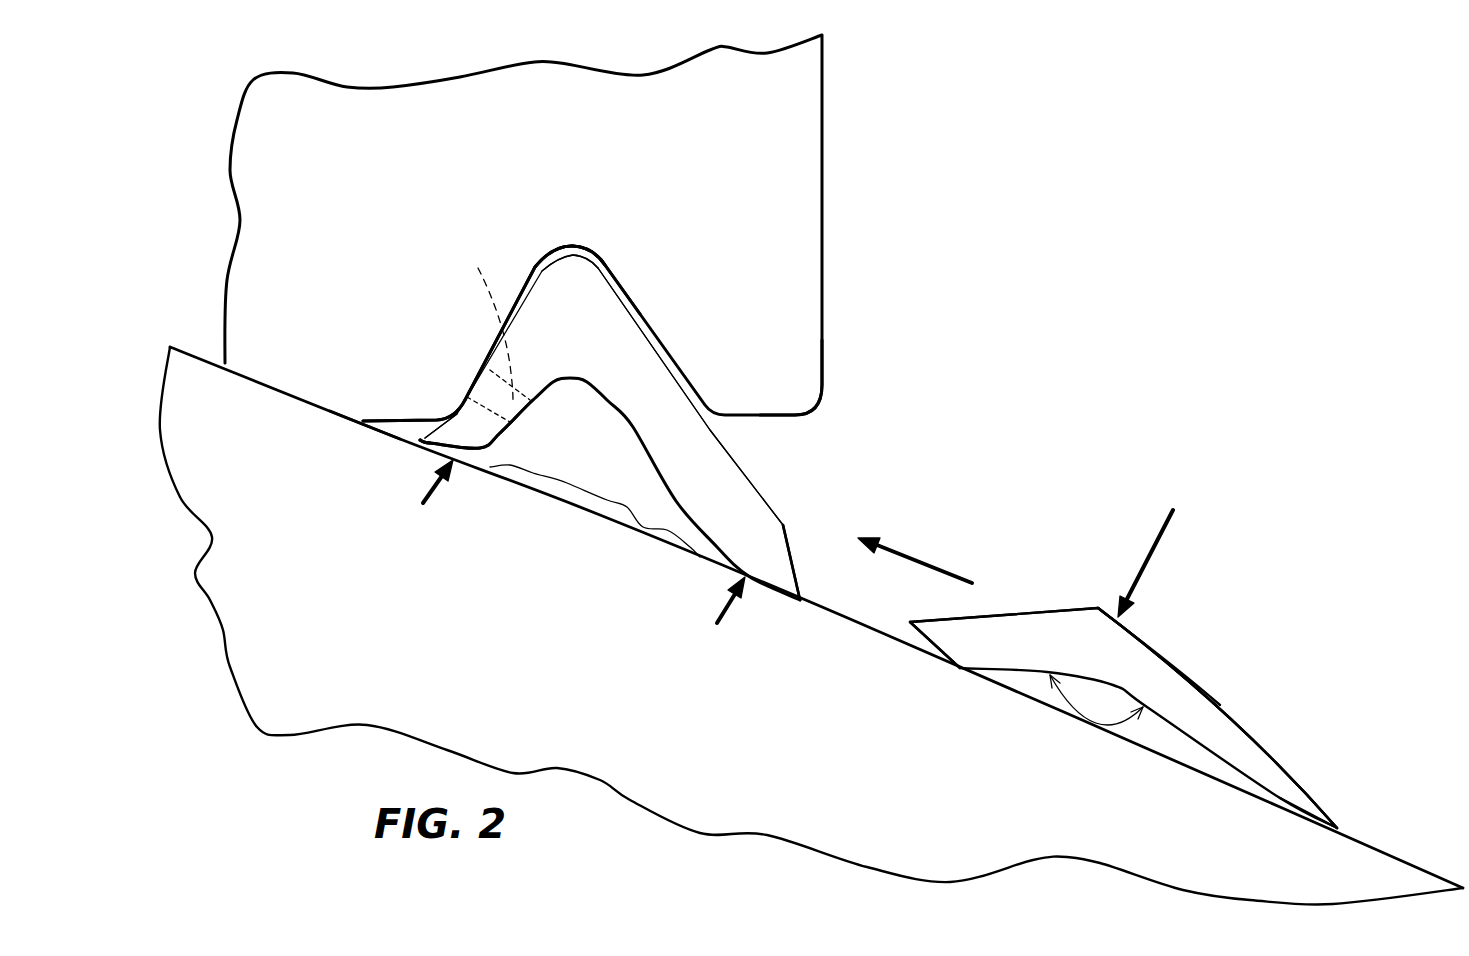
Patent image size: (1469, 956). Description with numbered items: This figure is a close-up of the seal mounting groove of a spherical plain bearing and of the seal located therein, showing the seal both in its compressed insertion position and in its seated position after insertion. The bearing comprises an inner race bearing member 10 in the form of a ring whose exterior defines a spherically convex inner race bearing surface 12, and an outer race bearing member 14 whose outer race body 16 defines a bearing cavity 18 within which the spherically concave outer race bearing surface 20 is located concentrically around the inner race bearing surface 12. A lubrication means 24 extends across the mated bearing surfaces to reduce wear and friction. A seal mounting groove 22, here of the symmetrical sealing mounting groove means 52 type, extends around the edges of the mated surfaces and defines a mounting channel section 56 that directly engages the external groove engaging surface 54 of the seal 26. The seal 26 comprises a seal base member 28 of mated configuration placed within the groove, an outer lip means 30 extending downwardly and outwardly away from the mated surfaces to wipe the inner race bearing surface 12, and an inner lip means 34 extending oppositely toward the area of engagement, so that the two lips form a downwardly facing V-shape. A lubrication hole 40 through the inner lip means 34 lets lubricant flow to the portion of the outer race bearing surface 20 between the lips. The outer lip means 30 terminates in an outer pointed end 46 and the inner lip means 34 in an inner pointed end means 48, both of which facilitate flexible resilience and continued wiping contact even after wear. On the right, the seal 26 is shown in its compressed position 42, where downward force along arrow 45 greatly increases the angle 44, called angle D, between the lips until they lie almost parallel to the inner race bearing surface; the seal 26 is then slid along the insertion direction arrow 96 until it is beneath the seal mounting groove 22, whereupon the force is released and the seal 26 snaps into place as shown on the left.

The inner race bearing member 10 is at (254, 470).
The inner race bearing surface 12 is at (392, 417).
The outer race bearing member 14 is at (746, 295).
The outer race body 16 is at (823, 380).
The bearing cavity 18 is at (395, 435).
The outer race bearing surface 20 is at (410, 428).
The seal mounting groove 22 is at (620, 283).
The lubrication means 24 is at (617, 515).
The seal 26 is at (735, 500).
The seal base member 28 is at (560, 267).
The outer lip means 30 is at (659, 448).
The inner lip means 34 is at (456, 440).
The lubrication hole 40 is at (495, 328).
The compressed position 42 is at (1093, 607).
The angle D 44 is at (1100, 707).
The arrow of force release 45 is at (1170, 530).
The outer pointed end 46 is at (800, 603).
The inner pointed end means 48 is at (425, 430).
The symmetrical sealing mounting groove means 52 is at (578, 297).
The groove engaging surface 54 is at (587, 243).
The mounting channel section 56 is at (537, 257).
The insertion direction arrow 96 is at (913, 553).